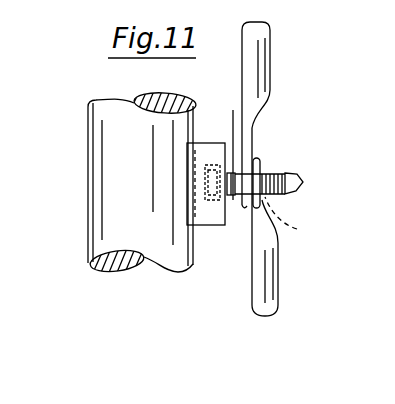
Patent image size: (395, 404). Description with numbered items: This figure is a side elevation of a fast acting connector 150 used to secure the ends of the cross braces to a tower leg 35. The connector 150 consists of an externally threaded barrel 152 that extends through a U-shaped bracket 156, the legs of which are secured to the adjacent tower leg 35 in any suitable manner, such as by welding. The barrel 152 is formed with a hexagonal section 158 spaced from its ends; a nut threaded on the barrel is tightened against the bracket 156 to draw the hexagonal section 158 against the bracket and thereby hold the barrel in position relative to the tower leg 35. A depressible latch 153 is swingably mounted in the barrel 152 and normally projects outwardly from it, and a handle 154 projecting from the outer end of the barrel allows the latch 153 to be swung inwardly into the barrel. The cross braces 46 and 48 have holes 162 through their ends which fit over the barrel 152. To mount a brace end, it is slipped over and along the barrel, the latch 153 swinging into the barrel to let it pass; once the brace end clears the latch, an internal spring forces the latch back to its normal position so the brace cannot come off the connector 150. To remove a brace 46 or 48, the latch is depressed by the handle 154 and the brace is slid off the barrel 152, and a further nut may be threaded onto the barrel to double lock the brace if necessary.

The tower leg 35 is at (88, 202).
The brace 46 is at (262, 57).
The brace 48 is at (273, 283).
The fast acting connector 150 is at (305, 158).
The externally threaded barrel 152 is at (272, 174).
The depressible latch 153 is at (266, 203).
The handle 154 is at (303, 183).
The U-shaped bracket 156 is at (216, 226).
The hexagonal section 158 is at (233, 110).
The hole 162 is at (296, 218).